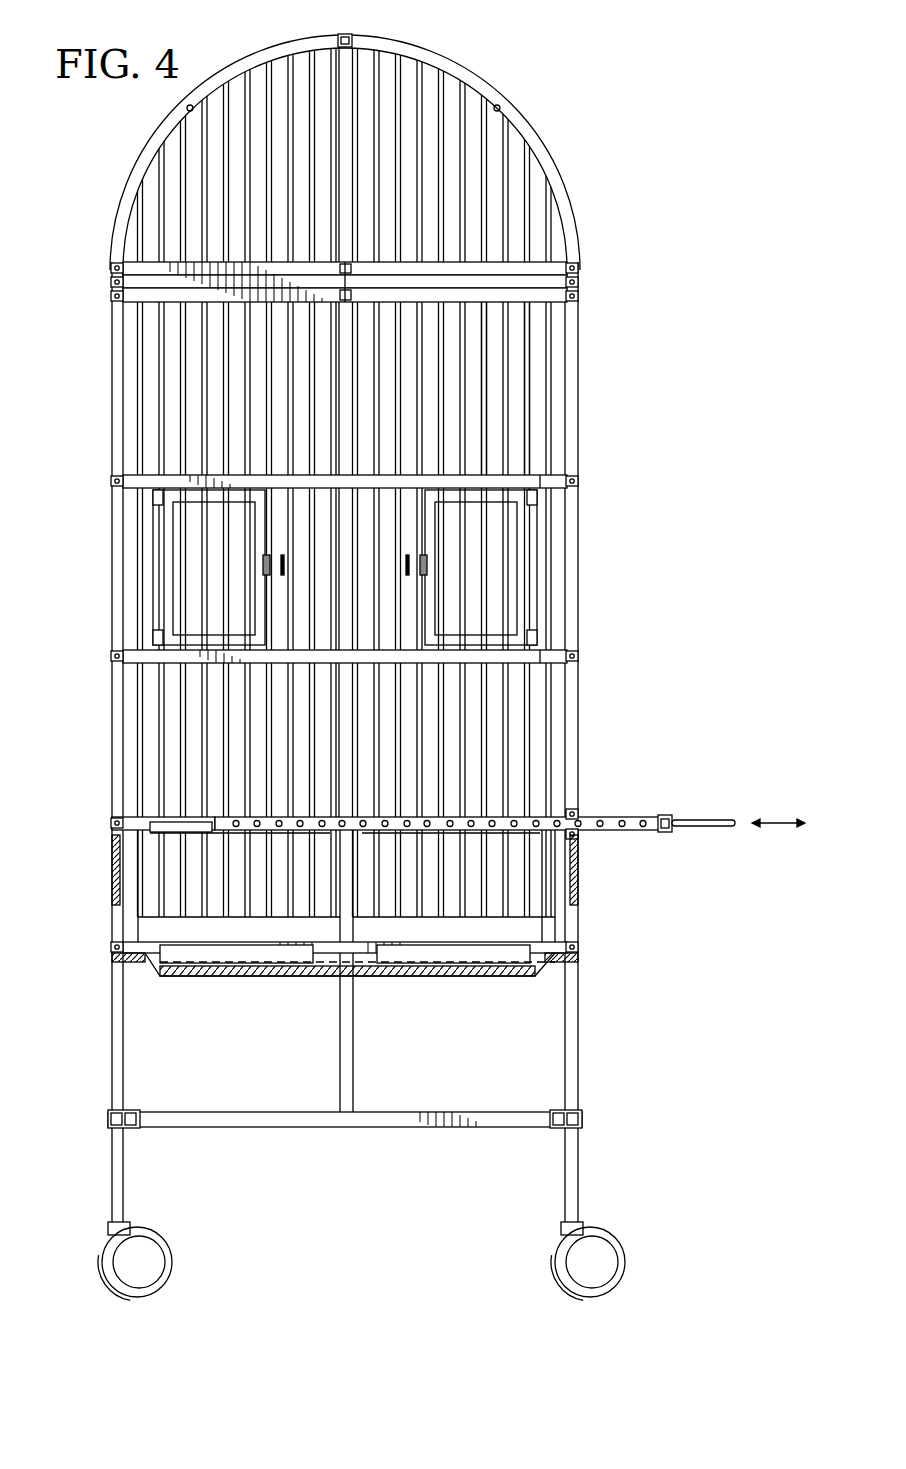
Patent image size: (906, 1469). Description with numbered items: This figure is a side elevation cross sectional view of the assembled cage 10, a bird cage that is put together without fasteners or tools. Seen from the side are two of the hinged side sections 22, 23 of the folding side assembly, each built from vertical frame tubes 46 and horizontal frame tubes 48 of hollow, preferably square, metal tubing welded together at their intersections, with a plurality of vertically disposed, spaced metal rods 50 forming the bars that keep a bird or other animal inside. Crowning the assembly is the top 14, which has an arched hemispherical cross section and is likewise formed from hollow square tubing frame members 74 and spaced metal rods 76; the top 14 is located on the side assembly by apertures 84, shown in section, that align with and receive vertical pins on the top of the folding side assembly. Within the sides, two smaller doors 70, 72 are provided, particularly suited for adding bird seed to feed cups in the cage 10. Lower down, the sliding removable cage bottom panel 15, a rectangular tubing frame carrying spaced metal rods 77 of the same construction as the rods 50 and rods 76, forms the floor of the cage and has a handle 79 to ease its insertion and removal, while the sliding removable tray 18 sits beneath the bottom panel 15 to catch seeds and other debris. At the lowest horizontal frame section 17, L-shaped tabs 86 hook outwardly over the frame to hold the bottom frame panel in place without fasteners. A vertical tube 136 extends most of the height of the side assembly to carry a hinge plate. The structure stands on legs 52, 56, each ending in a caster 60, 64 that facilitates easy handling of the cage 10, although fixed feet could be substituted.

The cage 10 is at (655, 143).
The top 14 is at (497, 148).
The sliding removable cage bottom panel 15 is at (660, 835).
The lower horizontal frame section 17 is at (388, 1115).
The sliding removable tray 18 is at (545, 968).
The side section 22 is at (183, 380).
The side section 23 is at (495, 387).
The vertical frame tube 46 is at (510, 657).
The horizontal frame tube 48 is at (572, 618).
The metal rod 50 is at (527, 420).
The leg 52 is at (575, 1165).
The leg 56 is at (120, 1165).
The caster 60 is at (605, 1255).
The caster 64 is at (150, 1255).
The door 70 is at (190, 568).
The door 72 is at (495, 558).
The frame member 74 is at (492, 92).
The metal rod 76 is at (398, 73).
The metal rod 77 is at (598, 815).
The handle 79 is at (720, 818).
The aperture 84 is at (350, 285).
The L-shaped tab 86 is at (120, 1108).
The vertical tube 136 is at (348, 1045).